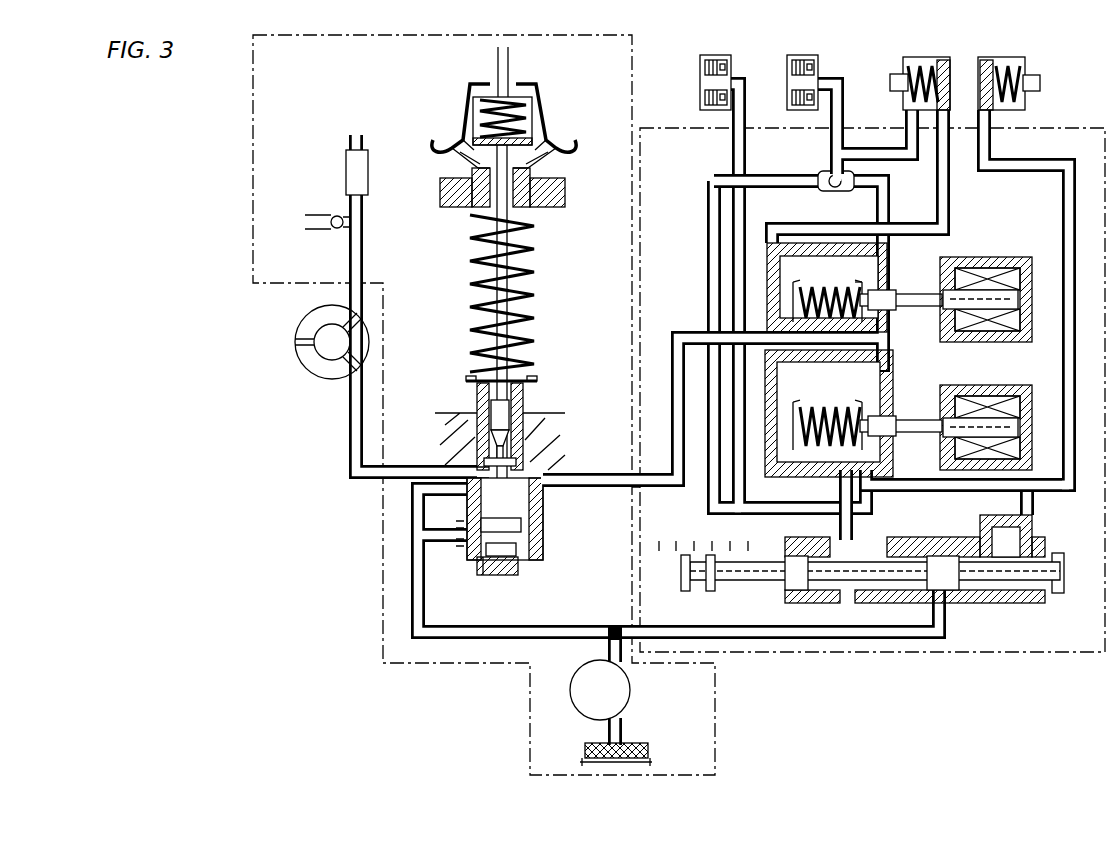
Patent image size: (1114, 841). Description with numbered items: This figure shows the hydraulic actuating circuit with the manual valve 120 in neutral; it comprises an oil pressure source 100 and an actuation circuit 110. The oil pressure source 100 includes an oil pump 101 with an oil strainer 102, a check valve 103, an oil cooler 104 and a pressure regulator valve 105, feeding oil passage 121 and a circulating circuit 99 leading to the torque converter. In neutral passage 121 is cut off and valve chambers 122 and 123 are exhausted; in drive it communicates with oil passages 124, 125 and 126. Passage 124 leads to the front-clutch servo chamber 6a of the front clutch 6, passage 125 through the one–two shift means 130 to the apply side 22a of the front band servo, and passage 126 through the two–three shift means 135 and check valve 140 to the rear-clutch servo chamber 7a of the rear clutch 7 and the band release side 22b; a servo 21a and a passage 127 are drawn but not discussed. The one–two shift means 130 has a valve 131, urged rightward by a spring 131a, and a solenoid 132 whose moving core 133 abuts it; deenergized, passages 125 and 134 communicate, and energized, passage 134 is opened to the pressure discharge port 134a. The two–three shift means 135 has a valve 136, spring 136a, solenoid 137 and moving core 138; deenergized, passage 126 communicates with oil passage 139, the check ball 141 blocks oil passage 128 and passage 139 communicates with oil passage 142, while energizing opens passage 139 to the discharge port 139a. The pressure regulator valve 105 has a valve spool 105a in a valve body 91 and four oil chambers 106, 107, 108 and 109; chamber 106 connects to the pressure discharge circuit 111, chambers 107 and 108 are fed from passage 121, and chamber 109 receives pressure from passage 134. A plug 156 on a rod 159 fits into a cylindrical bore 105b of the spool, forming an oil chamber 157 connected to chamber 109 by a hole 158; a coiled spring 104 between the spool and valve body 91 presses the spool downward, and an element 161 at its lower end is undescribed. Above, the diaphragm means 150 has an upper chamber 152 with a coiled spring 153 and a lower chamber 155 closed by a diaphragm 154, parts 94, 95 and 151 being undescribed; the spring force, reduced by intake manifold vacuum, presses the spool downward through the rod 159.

The first shift solenoid valve 6 is at (703, 58).
The passage from solenoid valve 6 6a is at (735, 60).
The second shift solenoid valve 7 is at (795, 52).
The passage from solenoid valve 7 7a is at (820, 62).
The solenoid actuator 21a is at (985, 57).
The passage from solenoid 22 22a is at (940, 57).
The solenoid actuator 22b is at (922, 64).
The valve housing 91 is at (562, 196).
The diaphragm cover 94 is at (540, 86).
The diaphragm 95 is at (462, 122).
The oil pump passage 99 is at (361, 478).
The transmission unit 100 is at (715, 690).
The oil pump 101 is at (630, 690).
The oil strainer 102 is at (635, 745).
The relief passage 103 is at (330, 228).
The pressure regulating passage 104 is at (368, 178).
The pressure regulating valve 105 is at (468, 405).
The valve flange 105a is at (520, 381).
The valve flange 105b is at (478, 378).
The valve element 106 is at (516, 459).
The valve body 107 is at (543, 497).
The valve land 108 is at (516, 549).
The valve plug 109 is at (508, 572).
The hydraulic control unit 110 is at (778, 655).
The inlet port 111 is at (470, 459).
The manual valve spool 120 is at (730, 584).
The line pressure passage 121 is at (413, 515).
The manual valve body 122 is at (852, 593).
The manual valve end 123 is at (1030, 603).
The port 124 is at (875, 529).
The port 125 is at (868, 502).
The passage 126 is at (830, 528).
The passage 127 is at (1072, 502).
The passage 128 is at (708, 252).
The second shift valve 130 is at (940, 386).
The shift valve spool 131 is at (906, 448).
The shift valve passage 131a is at (800, 430).
The solenoid coil 132 is at (993, 398).
The passage 133 is at (1012, 462).
The passage 134 is at (600, 478).
The port 134a is at (852, 379).
The first shift valve 135 is at (952, 259).
The shift valve spool 136 is at (903, 353).
The shift valve passage 136a is at (805, 298).
The solenoid coil 137 is at (992, 270).
The solenoid plunger 138 is at (1012, 331).
The valve stem 139 is at (901, 278).
The spring seat 139a is at (860, 279).
The check valve 140 is at (825, 191).
The check valve passage 141 is at (845, 191).
The passage 142 is at (830, 159).
The diaphragm actuator 150 is at (425, 112).
The actuator rod 151 is at (512, 50).
The spring housing 152 is at (535, 105).
The actuator spring 153 is at (490, 98).
The diaphragm 154 is at (555, 134).
The diaphragm retainer 155 is at (545, 150).
The valve plug 156 is at (512, 410).
The valve seat 157 is at (512, 432).
The valve land 158 is at (521, 525).
The regulating spring 159 is at (515, 241).
The drain port 161 is at (482, 562).